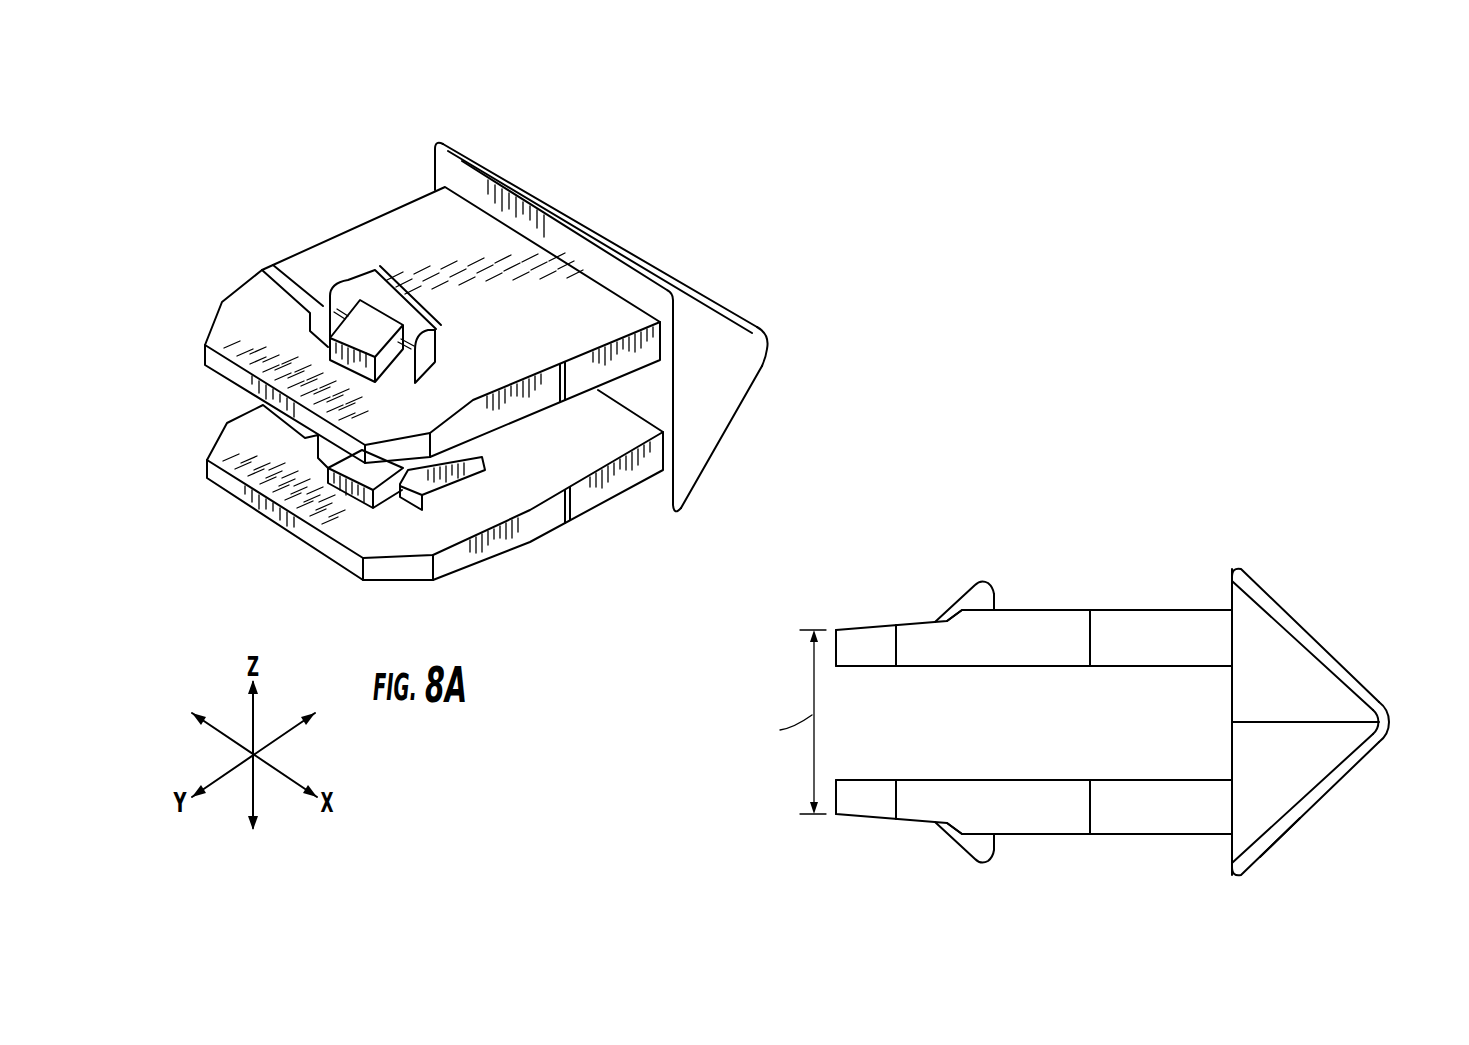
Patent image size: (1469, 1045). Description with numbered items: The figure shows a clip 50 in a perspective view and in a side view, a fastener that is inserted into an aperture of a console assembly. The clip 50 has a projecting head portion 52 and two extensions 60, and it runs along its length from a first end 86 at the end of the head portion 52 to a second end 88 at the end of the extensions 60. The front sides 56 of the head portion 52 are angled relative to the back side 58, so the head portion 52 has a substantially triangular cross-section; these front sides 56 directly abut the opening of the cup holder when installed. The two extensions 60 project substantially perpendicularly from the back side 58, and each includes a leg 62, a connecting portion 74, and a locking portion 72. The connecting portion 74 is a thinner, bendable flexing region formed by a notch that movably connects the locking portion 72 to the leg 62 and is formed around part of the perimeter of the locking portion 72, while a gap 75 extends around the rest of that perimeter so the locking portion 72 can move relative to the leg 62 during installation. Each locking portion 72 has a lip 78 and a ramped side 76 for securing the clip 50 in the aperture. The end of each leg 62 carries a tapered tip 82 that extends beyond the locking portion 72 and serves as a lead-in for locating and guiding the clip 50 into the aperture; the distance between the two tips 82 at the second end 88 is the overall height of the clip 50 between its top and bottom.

In FIG. 8A, the clip 50 is at (641, 170).
In FIG. 8B, the clip 50 is at (1324, 550).
In FIG. 8A, the head portion 52 is at (726, 430).
In FIG. 8B, the head portion 52 is at (1312, 810).
In FIG. 8A, the front sides 56 is at (593, 221).
In FIG. 8B, the front sides 56 is at (1318, 636).
In FIG. 8A, the back side 58 is at (660, 380).
In FIG. 8B, the back side 58 is at (1230, 588).
In FIG. 8A, the extensions 60 is at (411, 190).
In FIG. 8B, the extensions 60 is at (1115, 600).
In FIG. 8A, the leg 62 is at (378, 214).
In FIG. 8B, the leg 62 is at (1157, 609).
In FIG. 8A, the locking portion 72 is at (275, 265).
In FIG. 8B, the locking portion 72 is at (968, 585).
In FIG. 8A, the connecting portion 74 is at (452, 343).
In FIG. 8A, the gap 75 is at (435, 497).
In FIG. 8A, the ramped side 76 is at (360, 334).
In FIG. 8B, the ramped side 76 is at (957, 603).
In FIG. 8A, the lip 78 is at (332, 340).
In FIG. 8B, the lip 78 is at (996, 594).
In FIG. 8A, the tip 82 is at (235, 385).
In FIG. 8B, the tip 82 is at (878, 626).
In FIG. 8A, the first end 86 is at (767, 340).
In FIG. 8B, the first end 86 is at (1387, 716).
In FIG. 8A, the second end 88 is at (288, 538).
In FIG. 8B, the second end 88 is at (836, 815).